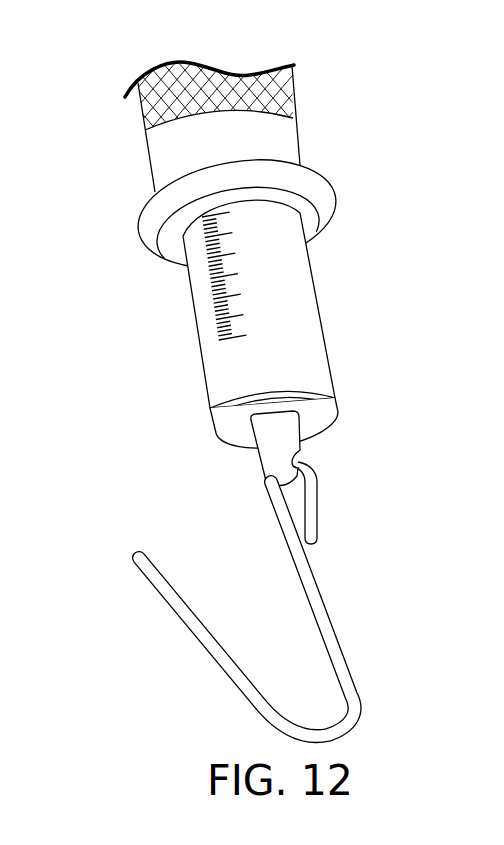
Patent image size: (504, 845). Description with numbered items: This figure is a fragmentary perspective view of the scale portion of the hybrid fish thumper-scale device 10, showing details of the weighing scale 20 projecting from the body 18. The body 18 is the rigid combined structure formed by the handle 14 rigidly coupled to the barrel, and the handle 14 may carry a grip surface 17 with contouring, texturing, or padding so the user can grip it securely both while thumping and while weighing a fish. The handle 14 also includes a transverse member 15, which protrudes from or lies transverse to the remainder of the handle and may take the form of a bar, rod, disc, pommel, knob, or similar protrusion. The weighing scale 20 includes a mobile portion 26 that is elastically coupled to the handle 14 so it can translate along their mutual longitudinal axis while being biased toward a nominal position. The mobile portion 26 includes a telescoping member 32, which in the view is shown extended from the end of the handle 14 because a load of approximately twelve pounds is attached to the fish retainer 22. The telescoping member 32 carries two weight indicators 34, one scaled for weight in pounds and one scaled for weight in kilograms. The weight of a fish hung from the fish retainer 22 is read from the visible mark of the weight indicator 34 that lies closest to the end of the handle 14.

The hybrid fish thumper-scale device 10 is at (217, 388).
The handle 14 is at (302, 138).
The transverse member 15 is at (336, 193).
The grip surface 17 is at (291, 92).
The body 18 is at (137, 148).
The weighing scale 20 is at (335, 436).
The fish retainer 22 is at (331, 626).
The mobile portion 26 is at (202, 375).
The telescoping member 32 is at (210, 412).
The weight indicator 34 is at (207, 315).